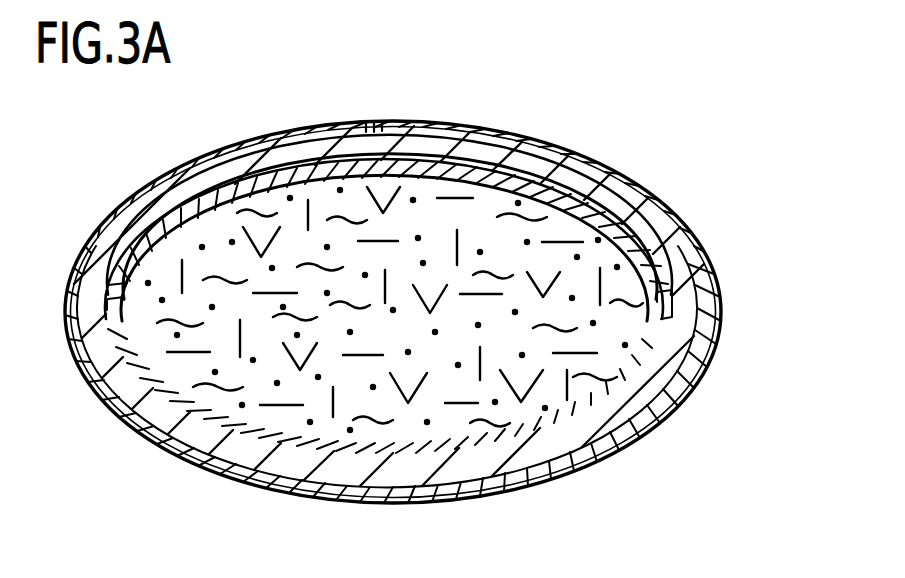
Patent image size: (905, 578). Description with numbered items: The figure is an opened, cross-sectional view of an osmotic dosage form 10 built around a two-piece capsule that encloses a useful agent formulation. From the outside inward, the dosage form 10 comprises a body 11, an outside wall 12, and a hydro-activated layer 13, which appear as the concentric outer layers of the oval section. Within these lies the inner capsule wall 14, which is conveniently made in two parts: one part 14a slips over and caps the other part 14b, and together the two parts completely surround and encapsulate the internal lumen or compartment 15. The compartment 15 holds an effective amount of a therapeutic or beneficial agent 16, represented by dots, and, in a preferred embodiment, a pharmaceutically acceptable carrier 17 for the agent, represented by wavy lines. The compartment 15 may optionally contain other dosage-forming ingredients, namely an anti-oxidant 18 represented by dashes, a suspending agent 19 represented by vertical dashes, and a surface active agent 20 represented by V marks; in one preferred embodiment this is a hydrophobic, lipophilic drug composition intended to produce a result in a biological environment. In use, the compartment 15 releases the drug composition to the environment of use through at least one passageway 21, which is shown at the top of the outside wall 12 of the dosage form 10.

The osmotic dosage form 10 is at (638, 152).
The body 11 is at (692, 232).
The outside wall 12 is at (698, 258).
The hydro-activated layer 13 is at (712, 360).
The inner capsule wall 14 is at (647, 433).
The capping part of inner capsule wall 14a is at (680, 397).
The capped part of inner capsule wall 14b is at (716, 290).
The compartment 15 is at (580, 410).
The therapeutic agent 16 is at (545, 410).
The pharmaceutically acceptable carrier 17 is at (487, 427).
The anti-oxidant 18 is at (283, 407).
The suspending agent 19 is at (325, 400).
The surface active agent 20 is at (423, 373).
The passageway 21 is at (388, 126).